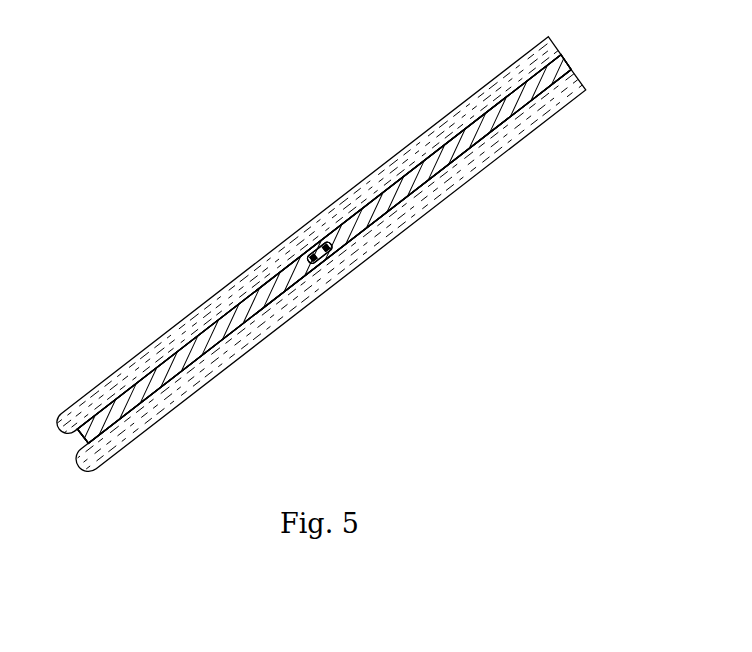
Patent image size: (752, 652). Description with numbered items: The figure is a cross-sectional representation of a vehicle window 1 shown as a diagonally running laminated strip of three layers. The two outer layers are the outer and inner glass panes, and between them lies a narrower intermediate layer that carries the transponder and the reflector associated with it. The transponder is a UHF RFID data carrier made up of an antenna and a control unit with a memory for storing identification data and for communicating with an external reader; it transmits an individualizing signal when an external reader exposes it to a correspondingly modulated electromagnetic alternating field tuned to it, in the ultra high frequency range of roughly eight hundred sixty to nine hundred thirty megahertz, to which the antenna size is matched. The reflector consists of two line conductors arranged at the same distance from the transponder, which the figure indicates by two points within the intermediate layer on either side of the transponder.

The laminated strip / belt 1 is at (321, 254).